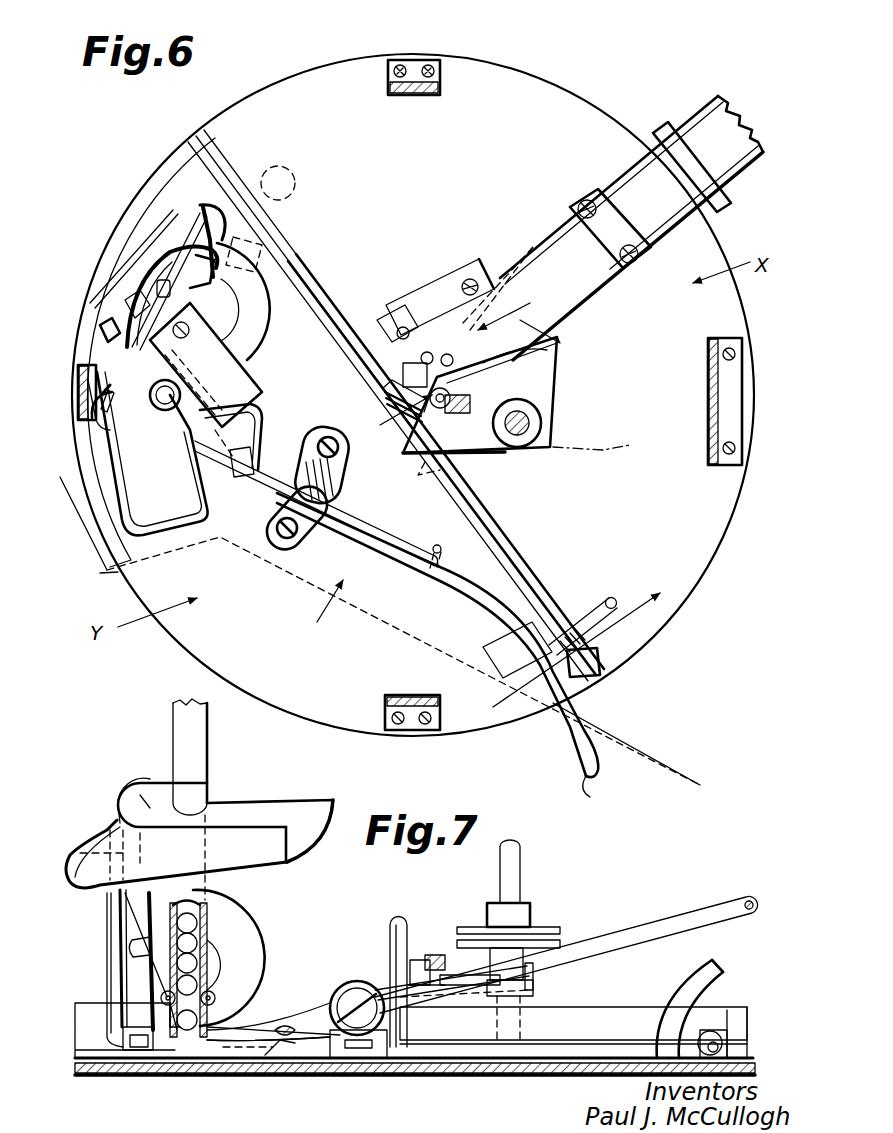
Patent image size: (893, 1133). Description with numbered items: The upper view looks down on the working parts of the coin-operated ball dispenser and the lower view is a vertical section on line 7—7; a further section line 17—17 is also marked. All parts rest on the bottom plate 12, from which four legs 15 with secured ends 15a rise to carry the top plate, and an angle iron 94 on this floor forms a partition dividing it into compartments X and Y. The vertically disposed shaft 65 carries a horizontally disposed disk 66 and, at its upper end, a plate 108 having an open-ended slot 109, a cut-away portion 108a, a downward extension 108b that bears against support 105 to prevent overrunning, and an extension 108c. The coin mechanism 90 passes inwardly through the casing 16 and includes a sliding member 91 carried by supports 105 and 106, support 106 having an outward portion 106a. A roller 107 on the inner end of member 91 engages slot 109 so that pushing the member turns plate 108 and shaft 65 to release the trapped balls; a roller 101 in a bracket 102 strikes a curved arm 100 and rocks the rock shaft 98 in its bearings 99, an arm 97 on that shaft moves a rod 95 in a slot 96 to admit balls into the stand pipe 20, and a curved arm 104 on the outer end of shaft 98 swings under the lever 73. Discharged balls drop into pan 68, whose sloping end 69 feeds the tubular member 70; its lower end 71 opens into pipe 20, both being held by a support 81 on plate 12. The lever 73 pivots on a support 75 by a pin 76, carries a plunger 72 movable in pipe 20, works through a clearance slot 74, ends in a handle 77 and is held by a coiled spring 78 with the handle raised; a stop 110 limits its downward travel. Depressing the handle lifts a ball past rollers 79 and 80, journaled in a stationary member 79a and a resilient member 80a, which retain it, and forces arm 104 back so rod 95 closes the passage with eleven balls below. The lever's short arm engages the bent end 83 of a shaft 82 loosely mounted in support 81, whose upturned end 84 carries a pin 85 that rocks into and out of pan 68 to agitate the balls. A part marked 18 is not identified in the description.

In FIG. 6, the bottom plate 12 is at (556, 118).
In FIG. 7, the bottom plate 12 is at (180, 1076).
In FIG. 6, the legs or brackets 15 is at (392, 96).
In FIG. 6, the ends of legs 15a is at (442, 76).
In FIG. 6, the casing 16 is at (455, 361).
In FIG. 6, the section line 17- 17 is at (563, 644).
In FIG. 6, the section line 7— 7 is at (371, 628).
In FIG. 6, the pawl 18 is at (212, 205).
In FIG. 6, the stand pipe 20 is at (148, 425).
In FIG. 7, the stand pipe 20 is at (183, 732).
In FIG. 6, the vertically disposed shaft 65 is at (541, 428).
In FIG. 7, the vertically disposed shaft 65 is at (522, 852).
In FIG. 7, the horizontally disposed disk 66 is at (555, 935).
In FIG. 6, the pan 68 is at (197, 500).
In FIG. 7, the pan 68 is at (267, 810).
In FIG. 6, the end of pan 69 is at (95, 420).
In FIG. 7, the end of pan 69 is at (127, 793).
In FIG. 6, the tubular member 70 is at (140, 240).
In FIG. 7, the tubular member 70 is at (242, 913).
In FIG. 6, the lower end of tubular member 71 is at (246, 345).
In FIG. 7, the lower end of tubular member 71 is at (247, 990).
In FIG. 7, the plunger 72 is at (190, 1050).
In FIG. 6, the lever 73 is at (465, 590).
In FIG. 7, the lever 73 is at (640, 920).
In FIG. 7, the vertically disposed slot 74 is at (253, 1020).
In FIG. 6, the support 75 is at (352, 488).
In FIG. 7, the support 75 is at (365, 1062).
In FIG. 6, the screw or pin 76 is at (298, 538).
In FIG. 7, the screw or pin 76 is at (357, 981).
In FIG. 6, the handle 77 is at (588, 795).
In FIG. 6, the coiled spring 78 is at (388, 557).
In FIG. 7, the coiled spring 78 is at (470, 995).
In FIG. 7, the roller 79 is at (204, 1001).
In FIG. 7, the stationary member 79a is at (222, 965).
In FIG. 7, the roller 80 is at (145, 985).
In FIG. 7, the resilient member 80a is at (130, 948).
In FIG. 6, the support 81 is at (195, 380).
In FIG. 7, the support 81 is at (135, 1062).
In FIG. 6, the shaft 82 is at (265, 410).
In FIG. 6, the bent end of shaft 83 is at (255, 450).
In FIG. 7, the bent end of shaft 83 is at (270, 1065).
In FIG. 6, the upwardly bent end 84 is at (127, 300).
In FIG. 7, the upwardly bent end 84 is at (118, 937).
In FIG. 6, the pin 85 is at (100, 325).
In FIG. 6, the coin mechanism 90 is at (690, 110).
In FIG. 6, the sliding member 91 is at (631, 193).
In FIG. 6, the angle iron 94 is at (318, 265).
In FIG. 7, the angle iron 94 is at (575, 1012).
In FIG. 6, the rod 95 is at (120, 280).
In FIG. 7, the rod 95 is at (105, 905).
In FIG. 6, the slot 96 is at (200, 222).
In FIG. 6, the arm 97 is at (278, 183).
In FIG. 7, the arm 97 is at (140, 1010).
In FIG. 6, the rock shaft 98 is at (330, 308).
In FIG. 7, the rock shaft 98 is at (515, 1076).
In FIG. 6, the bearings 99 is at (262, 246).
In FIG. 7, the bearings 99 is at (714, 1043).
In FIG. 6, the curved arm 100 is at (383, 396).
In FIG. 7, the curved arm 100 is at (398, 915).
In FIG. 6, the roller 101 is at (378, 345).
In FIG. 7, the roller 101 is at (418, 960).
In FIG. 6, the bracket 102 is at (440, 325).
In FIG. 6, the curved arm 104 is at (592, 600).
In FIG. 7, the curved arm 104 is at (680, 980).
In FIG. 6, the support 105 is at (455, 282).
In FIG. 6, the support 106 is at (600, 195).
In FIG. 6, the outwardly extending portion 106a is at (745, 176).
In FIG. 6, the roller 107 is at (460, 452).
In FIG. 7, the roller 107 is at (435, 955).
In FIG. 6, the horizontally disposed plate 108 is at (553, 400).
In FIG. 7, the horizontally disposed plate 108 is at (470, 963).
In FIG. 6, the cut-away portion 108a is at (430, 470).
In FIG. 6, the downward extension 108b is at (560, 340).
In FIG. 6, the extension 108c is at (556, 362).
In FIG. 6, the open-ended slot 109 is at (615, 452).
In FIG. 6, the stop 110 is at (486, 649).